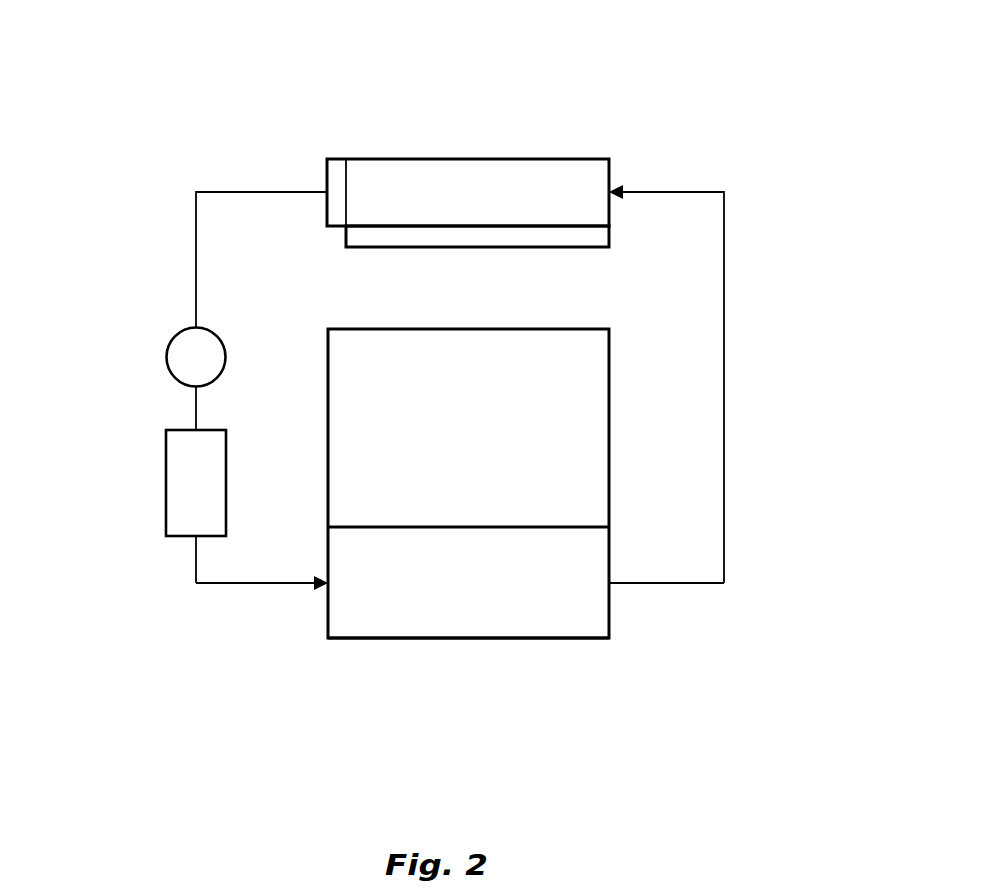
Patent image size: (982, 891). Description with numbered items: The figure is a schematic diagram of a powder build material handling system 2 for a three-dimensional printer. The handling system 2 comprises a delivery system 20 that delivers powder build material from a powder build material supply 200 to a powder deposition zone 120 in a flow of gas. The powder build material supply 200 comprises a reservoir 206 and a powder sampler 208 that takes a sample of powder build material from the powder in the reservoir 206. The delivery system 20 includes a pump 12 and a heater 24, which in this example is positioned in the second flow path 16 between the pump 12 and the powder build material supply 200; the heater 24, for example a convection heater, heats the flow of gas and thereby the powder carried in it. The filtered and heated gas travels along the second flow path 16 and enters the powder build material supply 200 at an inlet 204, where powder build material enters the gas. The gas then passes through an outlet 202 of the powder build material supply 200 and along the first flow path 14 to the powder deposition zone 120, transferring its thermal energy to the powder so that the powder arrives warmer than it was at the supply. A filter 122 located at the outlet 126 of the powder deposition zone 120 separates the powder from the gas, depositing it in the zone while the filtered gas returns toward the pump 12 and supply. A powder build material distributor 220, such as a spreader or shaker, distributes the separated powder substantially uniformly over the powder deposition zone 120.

The powder build material handling system 2 is at (164, 94).
The pump 12 is at (166, 357).
The first flow path 14 is at (724, 423).
The second flow path 16 is at (196, 232).
The delivery system 20 is at (232, 646).
The heater 24 is at (166, 485).
The powder deposition zone 120 is at (522, 159).
The filter 122 is at (337, 159).
The outlet 126 is at (327, 192).
The powder build material distributor 220 is at (609, 235).
The powder build material supply 200 is at (515, 638).
The outlet 202 is at (609, 583).
The inlet 204 is at (326, 586).
The reservoir 206 is at (609, 490).
The powder sampler 208 is at (385, 638).